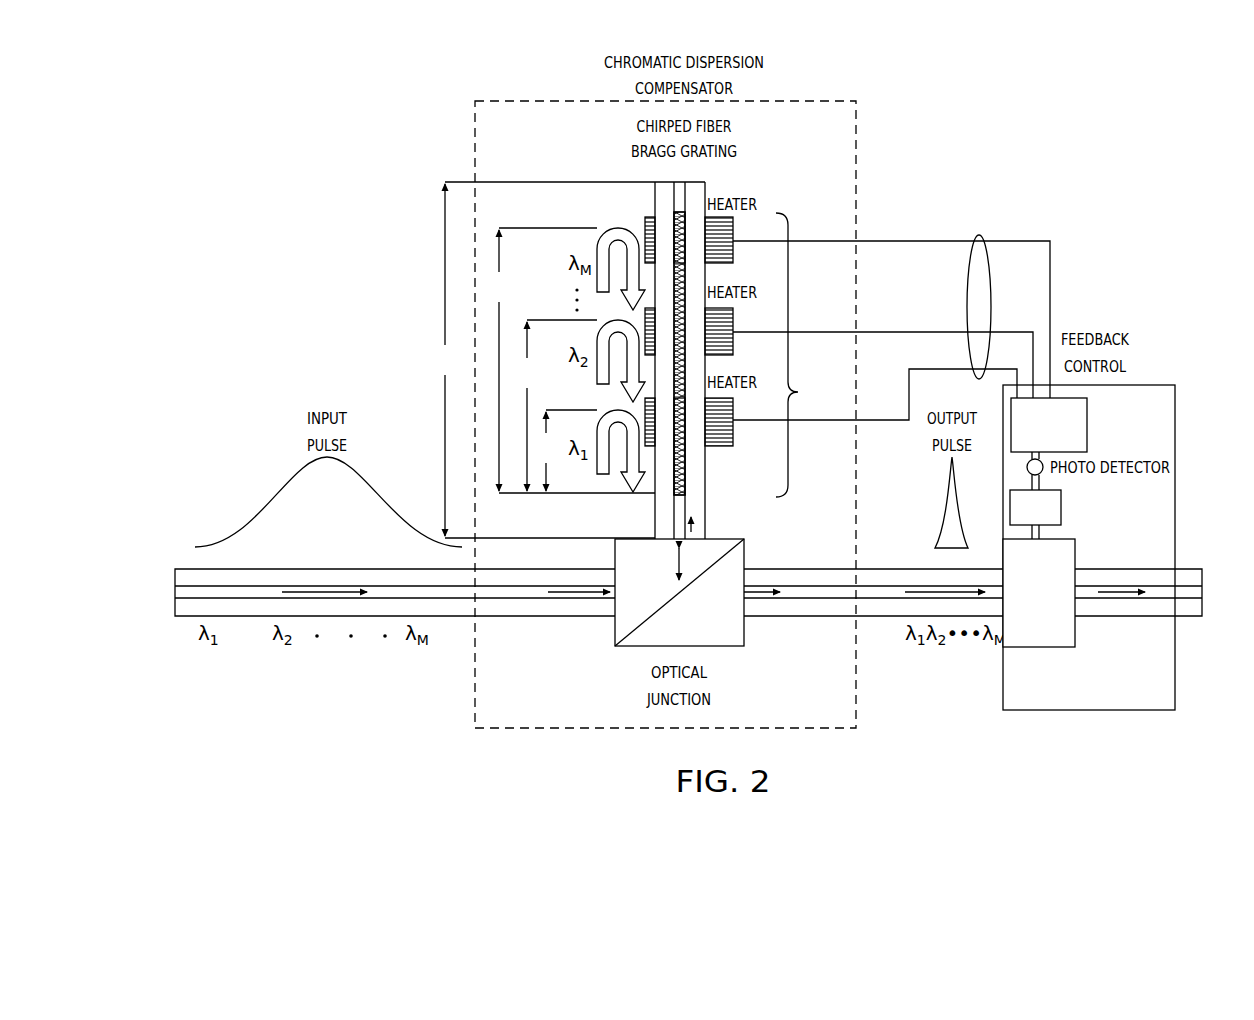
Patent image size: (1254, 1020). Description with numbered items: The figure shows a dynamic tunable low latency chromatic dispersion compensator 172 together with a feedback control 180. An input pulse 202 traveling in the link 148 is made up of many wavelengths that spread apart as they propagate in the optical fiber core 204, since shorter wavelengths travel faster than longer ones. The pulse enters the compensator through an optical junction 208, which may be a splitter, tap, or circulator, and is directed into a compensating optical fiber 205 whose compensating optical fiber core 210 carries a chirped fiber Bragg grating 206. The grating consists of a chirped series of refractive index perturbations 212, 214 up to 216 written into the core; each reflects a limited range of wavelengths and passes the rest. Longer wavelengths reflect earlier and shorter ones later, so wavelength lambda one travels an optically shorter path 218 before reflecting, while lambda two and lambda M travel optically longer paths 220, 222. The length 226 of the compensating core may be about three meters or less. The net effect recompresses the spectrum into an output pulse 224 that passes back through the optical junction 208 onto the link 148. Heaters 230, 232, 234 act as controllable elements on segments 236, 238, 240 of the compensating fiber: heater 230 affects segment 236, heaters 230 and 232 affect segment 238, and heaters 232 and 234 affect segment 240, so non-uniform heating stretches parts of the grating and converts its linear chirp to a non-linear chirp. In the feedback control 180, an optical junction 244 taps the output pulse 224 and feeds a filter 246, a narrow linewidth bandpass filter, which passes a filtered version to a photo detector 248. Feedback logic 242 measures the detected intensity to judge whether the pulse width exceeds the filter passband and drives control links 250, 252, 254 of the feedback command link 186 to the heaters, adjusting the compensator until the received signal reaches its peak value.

The link 148 is at (175, 573).
The chromatic dispersion compensator 172 is at (856, 168).
The feedback control 180 is at (1152, 385).
The feedback command link 186 is at (979, 235).
The input pulse 202 is at (285, 490).
The optical fiber core 204 is at (177, 592).
The compensating optical fiber 205 is at (691, 534).
The chirped fiber Bragg grating 206 is at (808, 355).
The optical junction 208 is at (615, 640).
The compensating optical fiber core 210 is at (674, 522).
The refractive index perturbation 212 is at (688, 497).
The refractive index perturbation 214 is at (688, 481).
The refractive index perturbation 216 is at (674, 212).
The optically shorter path 218 is at (561, 450).
The optically longer path 220 is at (551, 405).
The optically longer path 222 is at (566, 360).
The output pulse 224 is at (943, 516).
The length 226 is at (540, 360).
The heater 230 is at (735, 430).
The heater 232 is at (735, 312).
The heater 234 is at (735, 228).
The segment 236 is at (700, 462).
The segment 238 is at (700, 370).
The segment 240 is at (700, 278).
The feedback logic 242 is at (1093, 422).
The optical junction 244 is at (1040, 647).
The filter 246 is at (1061, 510).
The photo detector 248 is at (1043, 473).
The control link 250 is at (890, 421).
The control link 252 is at (890, 332).
The control link 254 is at (890, 241).